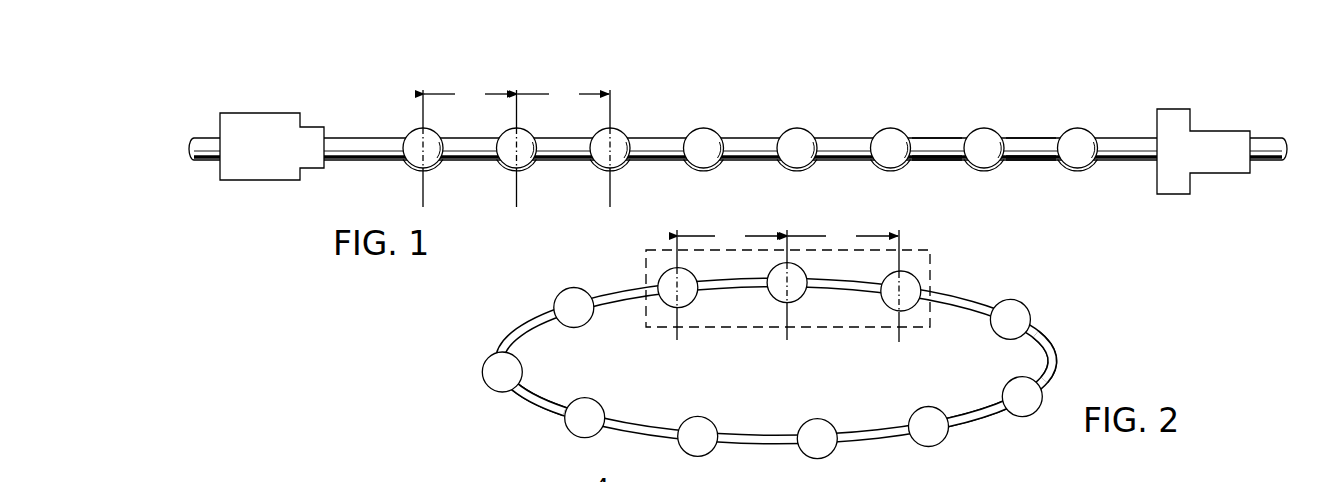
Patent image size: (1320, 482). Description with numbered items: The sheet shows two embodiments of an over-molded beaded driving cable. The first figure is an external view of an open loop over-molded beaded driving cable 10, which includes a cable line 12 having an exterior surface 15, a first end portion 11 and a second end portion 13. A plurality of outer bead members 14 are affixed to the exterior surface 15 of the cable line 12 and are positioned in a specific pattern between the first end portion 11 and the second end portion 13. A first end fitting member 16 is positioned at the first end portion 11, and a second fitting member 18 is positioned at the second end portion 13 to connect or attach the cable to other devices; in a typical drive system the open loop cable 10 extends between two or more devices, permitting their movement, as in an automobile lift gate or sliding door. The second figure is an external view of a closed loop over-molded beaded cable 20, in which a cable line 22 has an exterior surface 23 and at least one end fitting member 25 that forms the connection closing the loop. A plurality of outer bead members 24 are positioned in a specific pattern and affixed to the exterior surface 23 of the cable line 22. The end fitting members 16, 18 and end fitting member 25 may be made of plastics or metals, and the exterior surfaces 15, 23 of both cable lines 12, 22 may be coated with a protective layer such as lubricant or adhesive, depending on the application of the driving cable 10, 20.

In FIG. 1, the open loop over-molded beaded driving cable 10 is at (733, 131).
In FIG. 1, the first end portion 11 is at (286, 135).
In FIG. 1, the cable line 12 is at (931, 143).
In FIG. 1, the second end portion 13 is at (1221, 133).
In FIG. 1, the outer bead members 14 is at (792, 131).
In FIG. 1, the exterior surface 15 is at (1034, 140).
In FIG. 1, the first end fitting member 16 is at (252, 176).
In FIG. 1, the second fitting member 18 is at (1210, 166).
In FIG. 2, the closed loop over-molded beaded cable 20 is at (792, 353).
In FIG. 2, the cable line 22 is at (1049, 356).
In FIG. 2, the exterior surface 23 is at (978, 426).
In FIG. 2, the outer bead members 24 is at (932, 448).
In FIG. 2, the end fitting member 25 is at (522, 412).